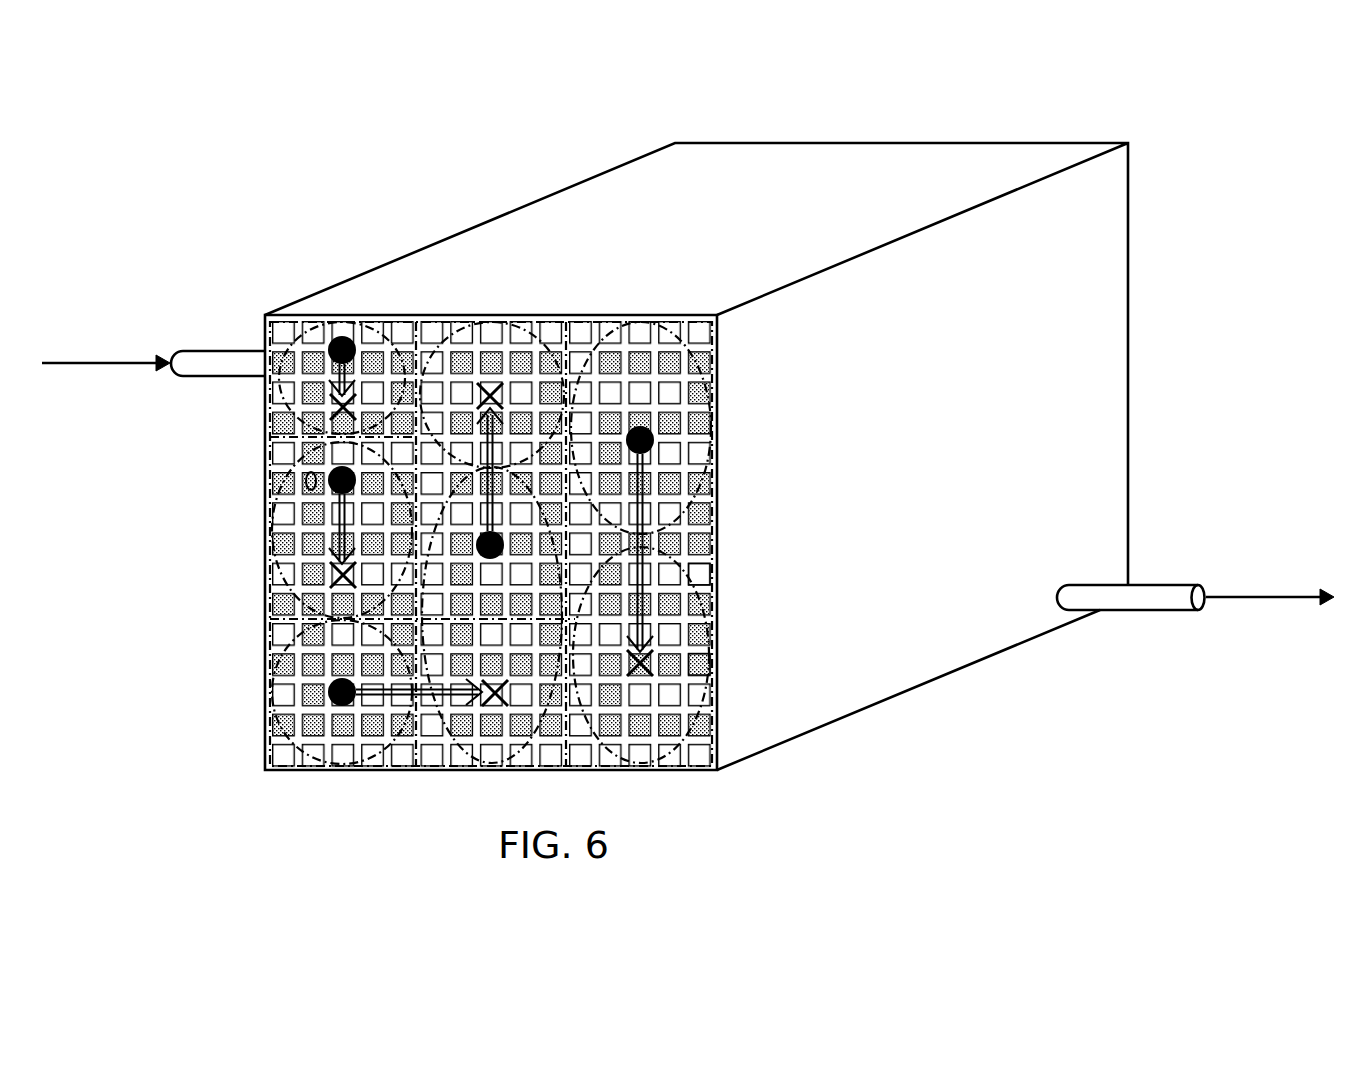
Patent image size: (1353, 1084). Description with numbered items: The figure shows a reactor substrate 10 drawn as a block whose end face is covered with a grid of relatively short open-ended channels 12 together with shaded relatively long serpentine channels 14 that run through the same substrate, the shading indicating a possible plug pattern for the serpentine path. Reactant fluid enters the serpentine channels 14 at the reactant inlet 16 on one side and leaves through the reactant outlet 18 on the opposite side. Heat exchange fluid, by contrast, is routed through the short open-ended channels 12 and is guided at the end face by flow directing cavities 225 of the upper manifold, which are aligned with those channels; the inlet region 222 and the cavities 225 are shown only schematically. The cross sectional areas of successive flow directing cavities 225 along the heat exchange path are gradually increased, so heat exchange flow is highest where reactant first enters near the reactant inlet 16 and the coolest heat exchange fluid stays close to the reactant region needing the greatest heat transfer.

The reactor substrate 10 is at (1130, 355).
The relatively short open-ended channels 12 is at (700, 572).
The relatively long serpentine channels 14 is at (700, 665).
The reactant inlet 16 is at (218, 351).
The reactant outlet 18 is at (1177, 585).
The inlet region 222 is at (315, 322).
The flow directing cavities 225 is at (460, 322).